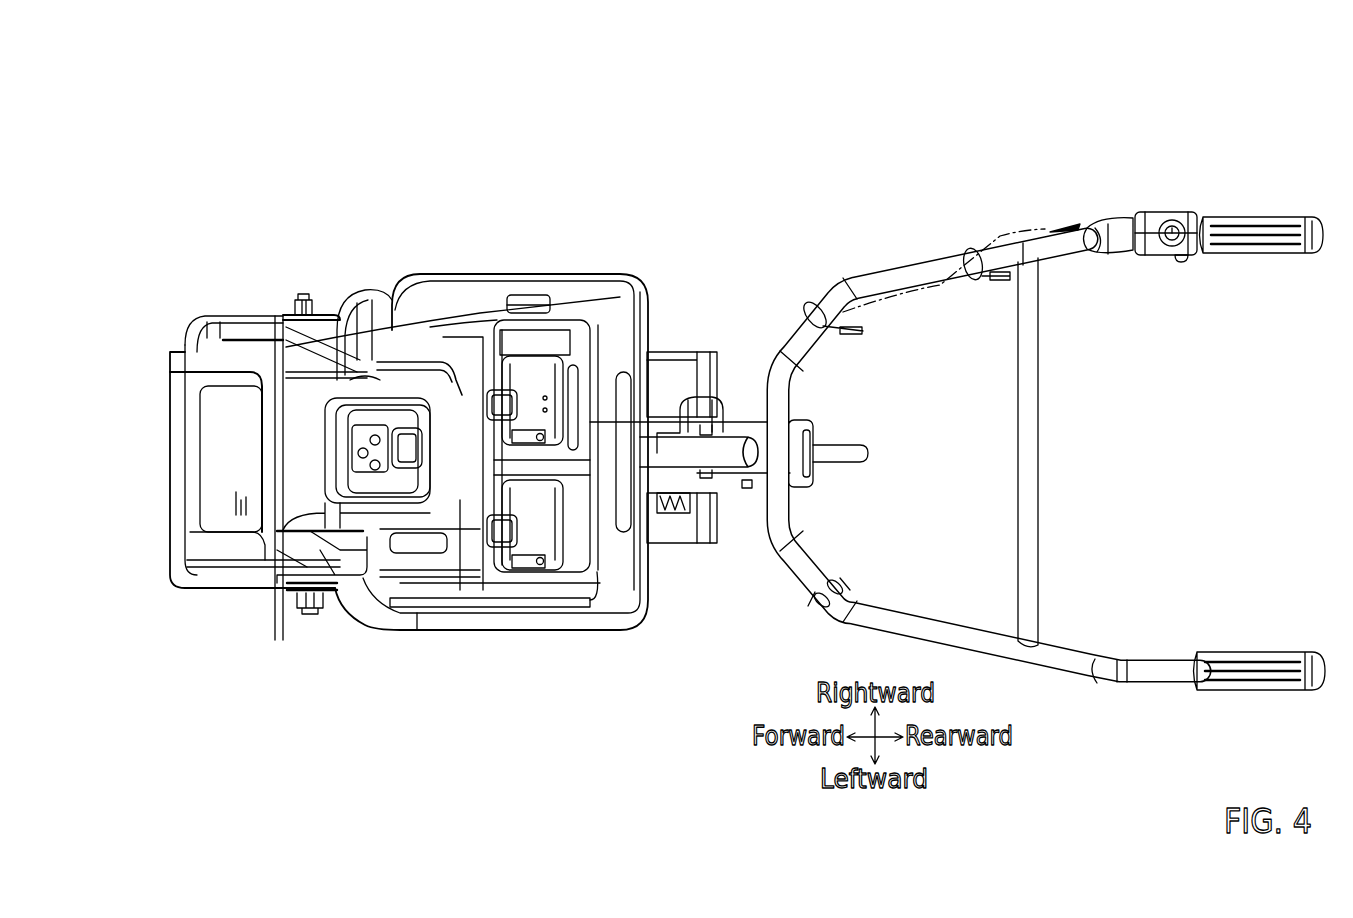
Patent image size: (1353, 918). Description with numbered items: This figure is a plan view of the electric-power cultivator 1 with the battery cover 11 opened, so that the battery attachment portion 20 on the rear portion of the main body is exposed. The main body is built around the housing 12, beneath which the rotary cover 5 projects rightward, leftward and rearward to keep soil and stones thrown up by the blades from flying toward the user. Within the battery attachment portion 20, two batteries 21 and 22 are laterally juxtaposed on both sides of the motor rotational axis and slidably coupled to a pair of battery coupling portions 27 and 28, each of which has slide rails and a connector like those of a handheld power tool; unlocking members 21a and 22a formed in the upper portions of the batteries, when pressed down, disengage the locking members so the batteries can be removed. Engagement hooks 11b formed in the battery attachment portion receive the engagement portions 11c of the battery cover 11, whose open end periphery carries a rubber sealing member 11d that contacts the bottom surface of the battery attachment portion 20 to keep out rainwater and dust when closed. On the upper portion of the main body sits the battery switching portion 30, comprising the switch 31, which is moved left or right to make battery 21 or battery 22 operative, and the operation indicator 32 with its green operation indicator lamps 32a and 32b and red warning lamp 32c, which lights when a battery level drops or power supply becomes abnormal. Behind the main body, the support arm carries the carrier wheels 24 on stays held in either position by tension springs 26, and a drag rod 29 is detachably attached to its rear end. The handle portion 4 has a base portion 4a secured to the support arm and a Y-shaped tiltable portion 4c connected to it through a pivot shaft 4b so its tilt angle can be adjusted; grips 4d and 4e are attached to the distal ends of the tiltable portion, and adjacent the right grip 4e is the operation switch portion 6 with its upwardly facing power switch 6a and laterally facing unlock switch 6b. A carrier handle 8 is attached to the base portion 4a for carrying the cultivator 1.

The electric-power cultivator 1 is at (624, 158).
The handle portion 4 is at (1051, 419).
The base portion 4a is at (720, 452).
The pivot shaft 4b is at (747, 490).
The tiltable portion 4c is at (904, 278).
The grip 4d is at (1250, 654).
The grip 4e is at (1252, 219).
The rotary cover 5 is at (620, 610).
The operation switch portion 6 is at (1156, 243).
The power switch 6a is at (1173, 221).
The unlock switch 6b is at (1182, 263).
The carrier handle 8 is at (647, 592).
The battery cover 11 is at (248, 580).
The engagement hook 11b is at (532, 390).
The engagement portion 11c is at (304, 298).
The sealing member 11d is at (335, 532).
The housing 12 is at (444, 322).
The battery attachment portion 20 is at (567, 460).
The battery 21 is at (546, 590).
The unlocking member 21a is at (488, 548).
The battery 22 is at (562, 383).
The unlocking member 22a is at (518, 393).
The carrier wheel 24 is at (681, 385).
The tension spring 26 is at (668, 514).
The battery coupling portion 27 is at (495, 598).
The battery coupling portion 28 is at (493, 330).
The drag rod 29 is at (838, 452).
The battery switching portion 30 is at (376, 340).
The switch 31 is at (410, 325).
The operation indicator 32 is at (300, 320).
The operation indicator lamp 32a is at (352, 480).
The operation indicator lamp 32b is at (346, 320).
The warning lamp 32c is at (360, 455).